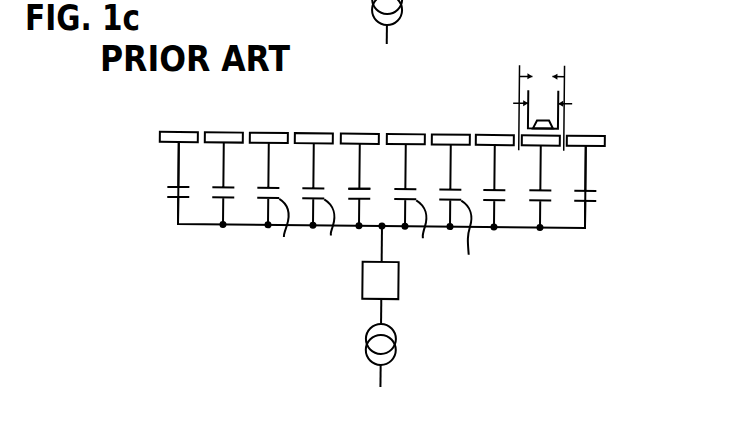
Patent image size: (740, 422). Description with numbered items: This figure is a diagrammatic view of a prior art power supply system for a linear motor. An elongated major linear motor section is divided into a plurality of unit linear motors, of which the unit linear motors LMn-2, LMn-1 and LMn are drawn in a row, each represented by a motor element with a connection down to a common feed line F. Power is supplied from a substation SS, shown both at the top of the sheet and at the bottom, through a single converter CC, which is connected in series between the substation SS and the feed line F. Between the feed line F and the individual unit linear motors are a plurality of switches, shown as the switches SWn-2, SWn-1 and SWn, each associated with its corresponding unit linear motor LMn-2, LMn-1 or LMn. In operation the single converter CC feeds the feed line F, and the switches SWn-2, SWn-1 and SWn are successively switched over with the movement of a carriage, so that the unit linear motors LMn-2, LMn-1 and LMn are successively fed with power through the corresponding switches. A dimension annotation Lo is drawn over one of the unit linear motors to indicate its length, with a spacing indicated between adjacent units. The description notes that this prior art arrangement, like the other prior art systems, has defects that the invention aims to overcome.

The unit linear motor LMn-2 is at (276, 165).
The unit linear motor LMn-1 is at (315, 132).
The unit linear motor LMn is at (362, 166).
The switch SWn-2 is at (279, 231).
The switch SWn-1 is at (344, 227).
The switch SWn is at (362, 188).
The converter CC is at (399, 279).
The substation SS is at (407, 6).
The feed line / bus F is at (562, 224).
The module length Lo is at (542, 109).